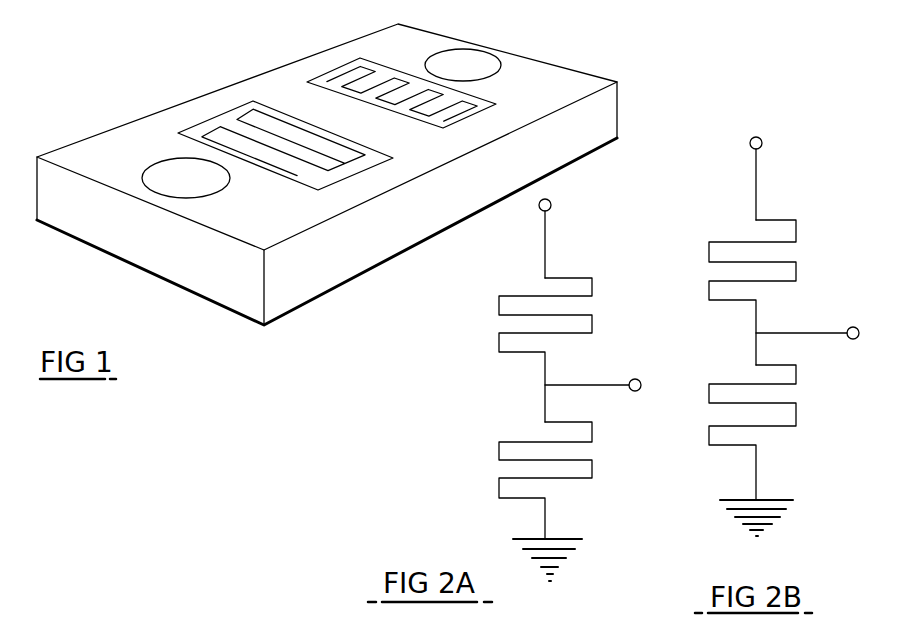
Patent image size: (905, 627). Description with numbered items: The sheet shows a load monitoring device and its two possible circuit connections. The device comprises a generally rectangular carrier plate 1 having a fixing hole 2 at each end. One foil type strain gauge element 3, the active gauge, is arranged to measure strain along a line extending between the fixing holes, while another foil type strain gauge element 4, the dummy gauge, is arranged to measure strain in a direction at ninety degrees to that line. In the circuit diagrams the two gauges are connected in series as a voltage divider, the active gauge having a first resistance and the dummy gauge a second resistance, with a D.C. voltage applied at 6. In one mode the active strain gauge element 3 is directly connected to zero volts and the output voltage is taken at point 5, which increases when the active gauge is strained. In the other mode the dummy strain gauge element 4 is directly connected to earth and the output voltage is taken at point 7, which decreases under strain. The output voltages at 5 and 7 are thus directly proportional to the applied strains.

In FIG. 1, the carrier plate 1 is at (122, 123).
In FIG. 1, the fixing hole 2 is at (170, 190).
In FIG. 1, the strain gauge element (active gauge) 3 is at (489, 105).
In FIG. 2A, the strain gauge element (active gauge) 3 is at (490, 489).
In FIG. 2B, the strain gauge element (active gauge) 3 is at (695, 252).
In FIG. 1, the strain gauge element (dummy gauge) 4 is at (378, 158).
In FIG. 2A, the strain gauge element (dummy gauge) 4 is at (492, 342).
In FIG. 2B, the strain gauge element (dummy gauge) 4 is at (697, 402).
In FIG. 2A, the output point 5 is at (635, 391).
In FIG. 2A, the supply voltage point 6 is at (551, 205).
In FIG. 2B, the output point 7 is at (853, 339).